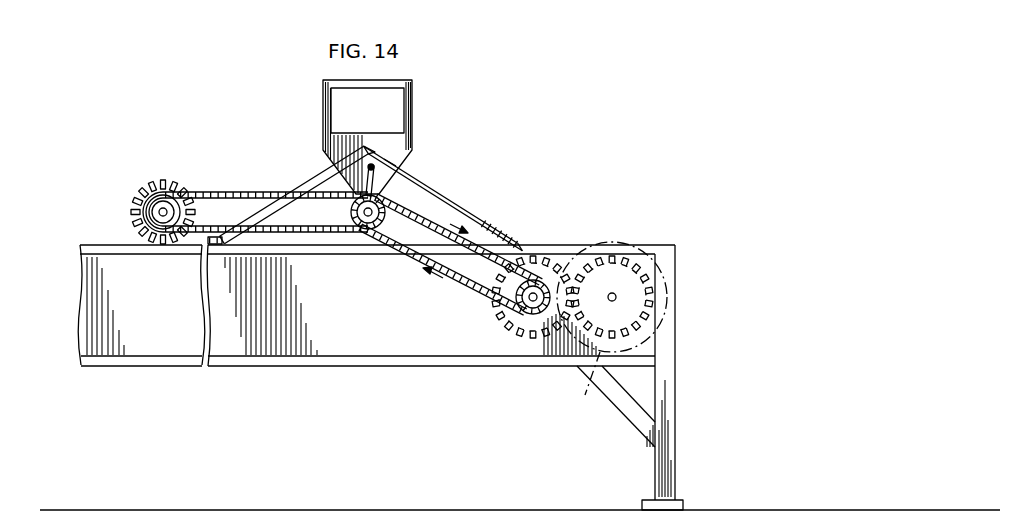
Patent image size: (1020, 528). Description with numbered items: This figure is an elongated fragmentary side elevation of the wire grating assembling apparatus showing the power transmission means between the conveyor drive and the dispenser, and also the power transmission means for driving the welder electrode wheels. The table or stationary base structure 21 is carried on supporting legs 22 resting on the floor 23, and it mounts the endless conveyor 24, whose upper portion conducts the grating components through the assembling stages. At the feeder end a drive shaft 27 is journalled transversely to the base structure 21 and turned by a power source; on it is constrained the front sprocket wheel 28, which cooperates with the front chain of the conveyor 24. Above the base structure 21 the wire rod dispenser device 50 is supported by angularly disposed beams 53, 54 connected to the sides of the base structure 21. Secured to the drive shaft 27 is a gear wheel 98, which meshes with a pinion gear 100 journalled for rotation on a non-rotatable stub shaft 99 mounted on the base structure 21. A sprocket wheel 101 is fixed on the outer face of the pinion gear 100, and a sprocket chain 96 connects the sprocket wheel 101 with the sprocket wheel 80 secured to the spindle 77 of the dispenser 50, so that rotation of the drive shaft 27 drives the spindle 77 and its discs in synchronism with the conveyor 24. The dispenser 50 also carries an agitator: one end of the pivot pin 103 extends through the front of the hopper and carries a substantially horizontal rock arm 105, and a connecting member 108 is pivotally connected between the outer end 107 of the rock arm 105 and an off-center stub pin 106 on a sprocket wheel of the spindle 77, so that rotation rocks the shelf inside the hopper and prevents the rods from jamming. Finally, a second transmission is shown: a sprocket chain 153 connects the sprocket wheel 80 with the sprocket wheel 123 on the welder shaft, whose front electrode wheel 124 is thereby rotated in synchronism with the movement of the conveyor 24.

The stationary base structure 21 is at (332, 365).
The supporting legs 22 is at (677, 466).
The floor 23 is at (369, 508).
The endless conveyor 24 is at (105, 249).
The drive shaft 27 is at (616, 296).
The front sprocket wheel 28 is at (585, 384).
The wire rod dispenser device 50 is at (412, 110).
The angularly disposed beam 53 is at (318, 178).
The angularly disposed beam 54 is at (488, 220).
The spindle 77 is at (353, 228).
The sprocket wheel 80 is at (383, 218).
The sprocket chain 96 is at (437, 230).
The gear wheel 98 is at (628, 268).
The stub shaft 99 is at (520, 303).
The pinion gear 100 is at (517, 328).
The sprocket wheel 101 is at (541, 283).
The pivot pin 103 is at (400, 148).
The rock arm 105 is at (397, 164).
The stub pin 106 is at (352, 216).
The outer end of rock arm 107 is at (377, 167).
The connecting member 108 is at (378, 192).
The sprocket wheel 123 is at (135, 212).
The front electrode wheel 124 is at (178, 181).
The sprocket chain 153 is at (257, 192).